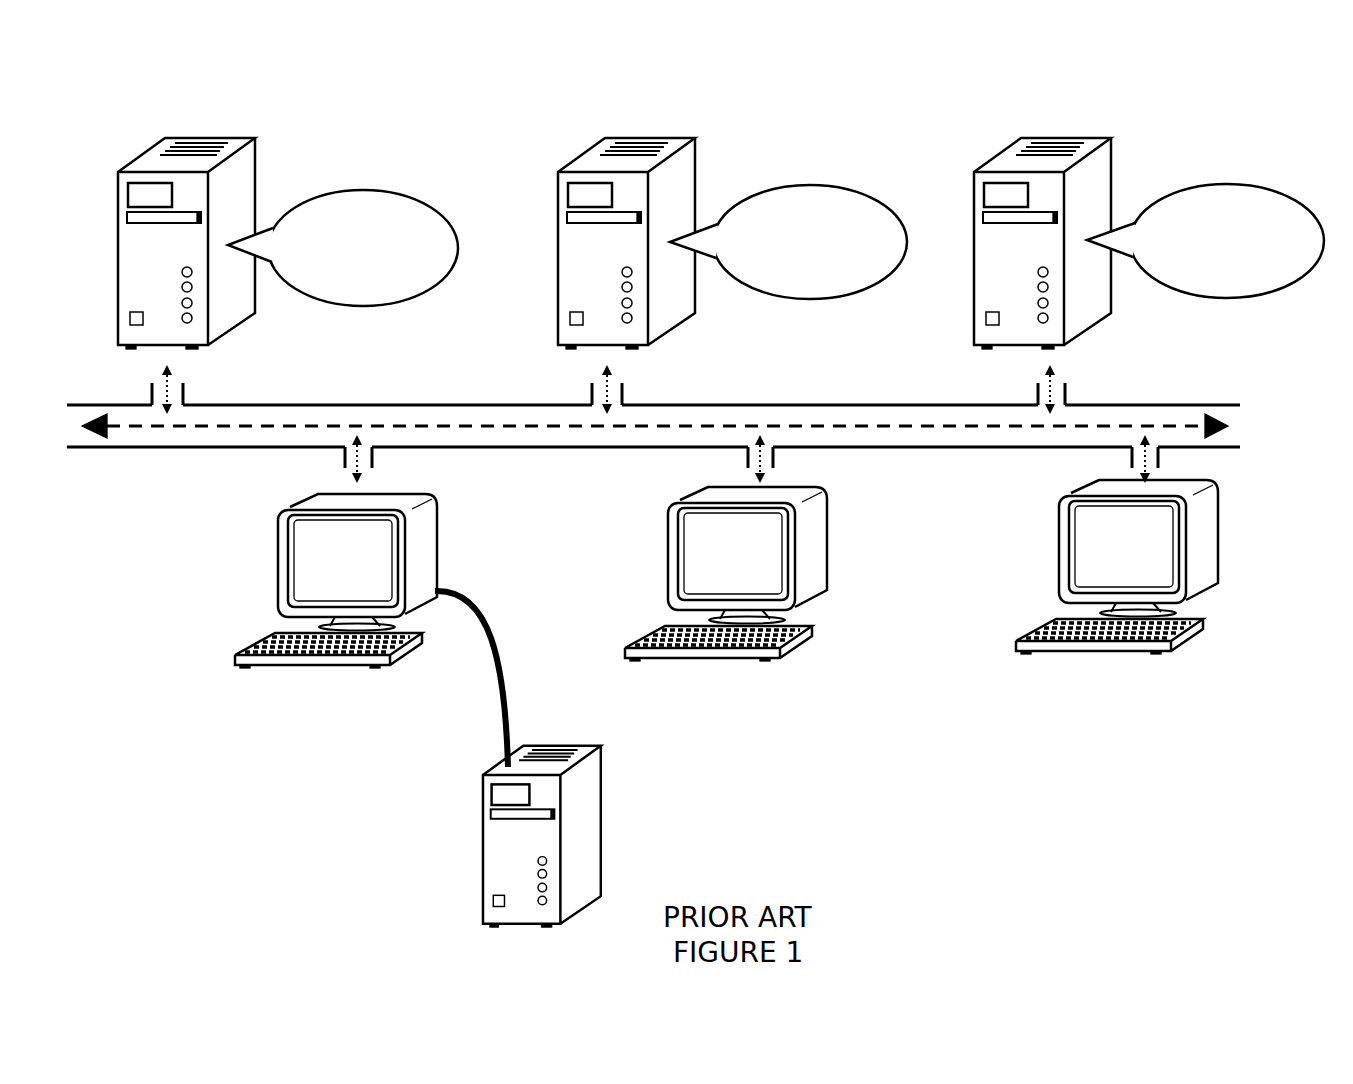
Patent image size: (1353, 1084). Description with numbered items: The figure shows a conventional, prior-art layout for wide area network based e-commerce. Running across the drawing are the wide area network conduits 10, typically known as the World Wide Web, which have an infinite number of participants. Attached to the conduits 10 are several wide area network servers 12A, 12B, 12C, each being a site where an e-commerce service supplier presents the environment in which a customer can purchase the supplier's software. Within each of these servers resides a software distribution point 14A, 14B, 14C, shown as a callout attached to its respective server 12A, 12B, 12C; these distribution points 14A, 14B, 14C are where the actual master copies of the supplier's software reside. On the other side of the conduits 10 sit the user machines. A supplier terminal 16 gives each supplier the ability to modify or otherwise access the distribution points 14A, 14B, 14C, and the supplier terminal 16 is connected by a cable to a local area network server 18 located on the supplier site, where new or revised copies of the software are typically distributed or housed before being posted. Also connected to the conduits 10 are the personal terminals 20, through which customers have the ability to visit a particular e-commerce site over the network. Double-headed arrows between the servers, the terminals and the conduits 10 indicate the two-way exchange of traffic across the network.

The wide area network conduits 10 is at (221, 452).
The wide area network server 12A is at (243, 160).
The wide area network server 12B is at (683, 160).
The wide area network server 12C is at (1095, 160).
The software distribution point 14A is at (368, 197).
The software distribution point 14B is at (813, 188).
The software distribution point 14C is at (1217, 192).
The supplier terminal 16 is at (328, 688).
The local area network server 18 is at (582, 820).
The personal terminal 20 is at (838, 653).